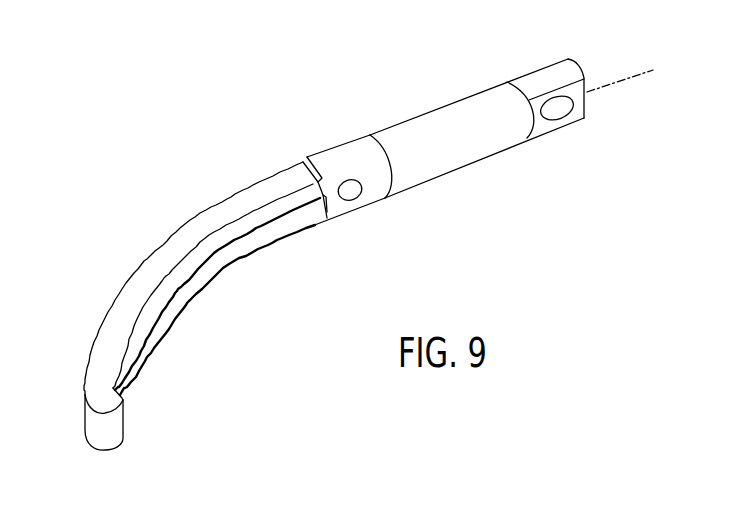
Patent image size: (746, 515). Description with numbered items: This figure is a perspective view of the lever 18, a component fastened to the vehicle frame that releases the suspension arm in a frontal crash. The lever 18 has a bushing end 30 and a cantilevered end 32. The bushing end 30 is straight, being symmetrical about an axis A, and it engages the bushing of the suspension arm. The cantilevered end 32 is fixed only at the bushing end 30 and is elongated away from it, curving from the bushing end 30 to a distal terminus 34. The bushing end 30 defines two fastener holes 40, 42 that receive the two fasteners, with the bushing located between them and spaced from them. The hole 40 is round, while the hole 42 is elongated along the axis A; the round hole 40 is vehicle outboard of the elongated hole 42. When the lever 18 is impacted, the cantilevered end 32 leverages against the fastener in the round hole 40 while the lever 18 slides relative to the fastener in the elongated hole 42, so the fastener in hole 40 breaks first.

The lever 18 is at (172, 326).
The bushing end 30 is at (489, 133).
The cantilevered end 32 is at (58, 392).
The distal terminus 34 is at (115, 451).
The fastener hole 40 is at (361, 198).
The fastener hole 42 is at (563, 122).
The axis A is at (629, 74).